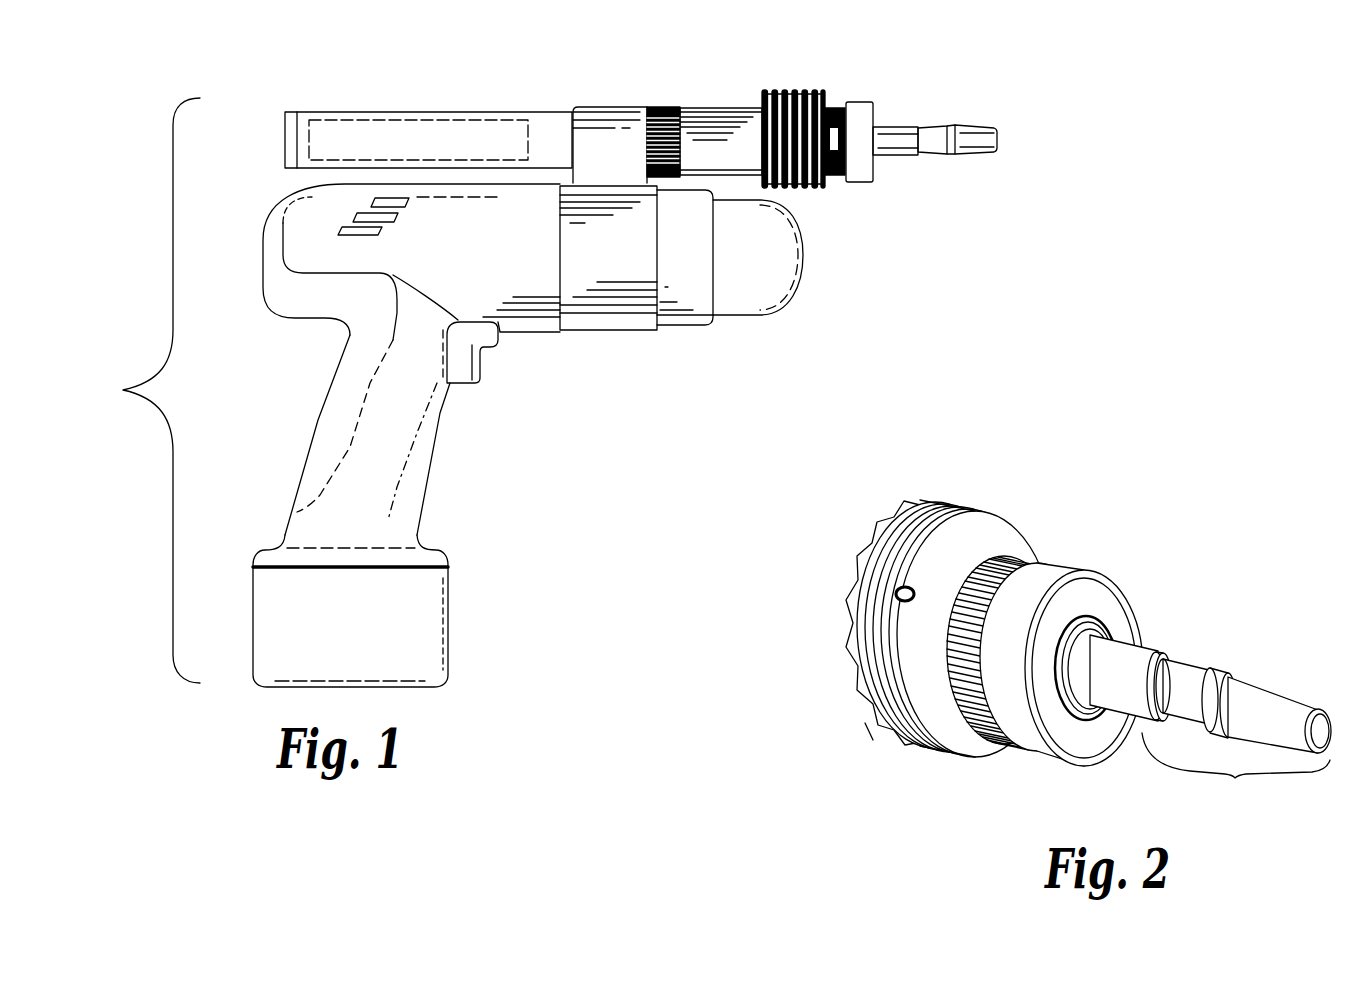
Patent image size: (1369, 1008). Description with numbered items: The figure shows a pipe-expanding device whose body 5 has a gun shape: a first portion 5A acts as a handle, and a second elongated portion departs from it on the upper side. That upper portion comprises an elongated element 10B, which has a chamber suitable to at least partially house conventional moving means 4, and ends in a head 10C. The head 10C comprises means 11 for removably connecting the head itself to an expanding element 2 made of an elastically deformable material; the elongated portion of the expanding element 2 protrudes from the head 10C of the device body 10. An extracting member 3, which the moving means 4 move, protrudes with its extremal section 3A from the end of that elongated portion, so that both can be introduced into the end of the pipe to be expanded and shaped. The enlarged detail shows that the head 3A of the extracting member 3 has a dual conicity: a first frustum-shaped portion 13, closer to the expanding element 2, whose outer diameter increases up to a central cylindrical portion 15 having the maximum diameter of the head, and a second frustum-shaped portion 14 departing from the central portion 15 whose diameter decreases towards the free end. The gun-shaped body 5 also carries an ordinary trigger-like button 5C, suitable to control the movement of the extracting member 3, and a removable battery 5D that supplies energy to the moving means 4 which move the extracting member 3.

In FIG. 1, the device body 10 is at (283, 135).
In FIG. 1, the moving means 4 is at (357, 118).
In FIG. 1, the elongated element 10B is at (450, 110).
In FIG. 1, the head 10C is at (860, 100).
In FIG. 2, the head 10C is at (1069, 567).
In FIG. 1, the expanding element 2 is at (890, 125).
In FIG. 2, the expanding element 2 is at (1134, 648).
In FIG. 1, the extracting member 3 is at (965, 125).
In FIG. 2, the extracting member 3 is at (1263, 696).
In FIG. 1, the body 5 is at (453, 390).
In FIG. 1, the first portion 5A is at (405, 490).
In FIG. 1, the trigger-like button 5C is at (481, 362).
In FIG. 1, the removable battery 5D is at (449, 628).
In FIG. 2, the means for removably connecting 11 is at (1022, 749).
In FIG. 2, the first frustum-shaped portion 13 is at (1192, 682).
In FIG. 2, the central cylindrical portion 15 is at (1231, 678).
In FIG. 2, the second frustum-shaped portion 14 is at (1295, 703).
In FIG. 2, the head of the extracting member 3A is at (1236, 777).